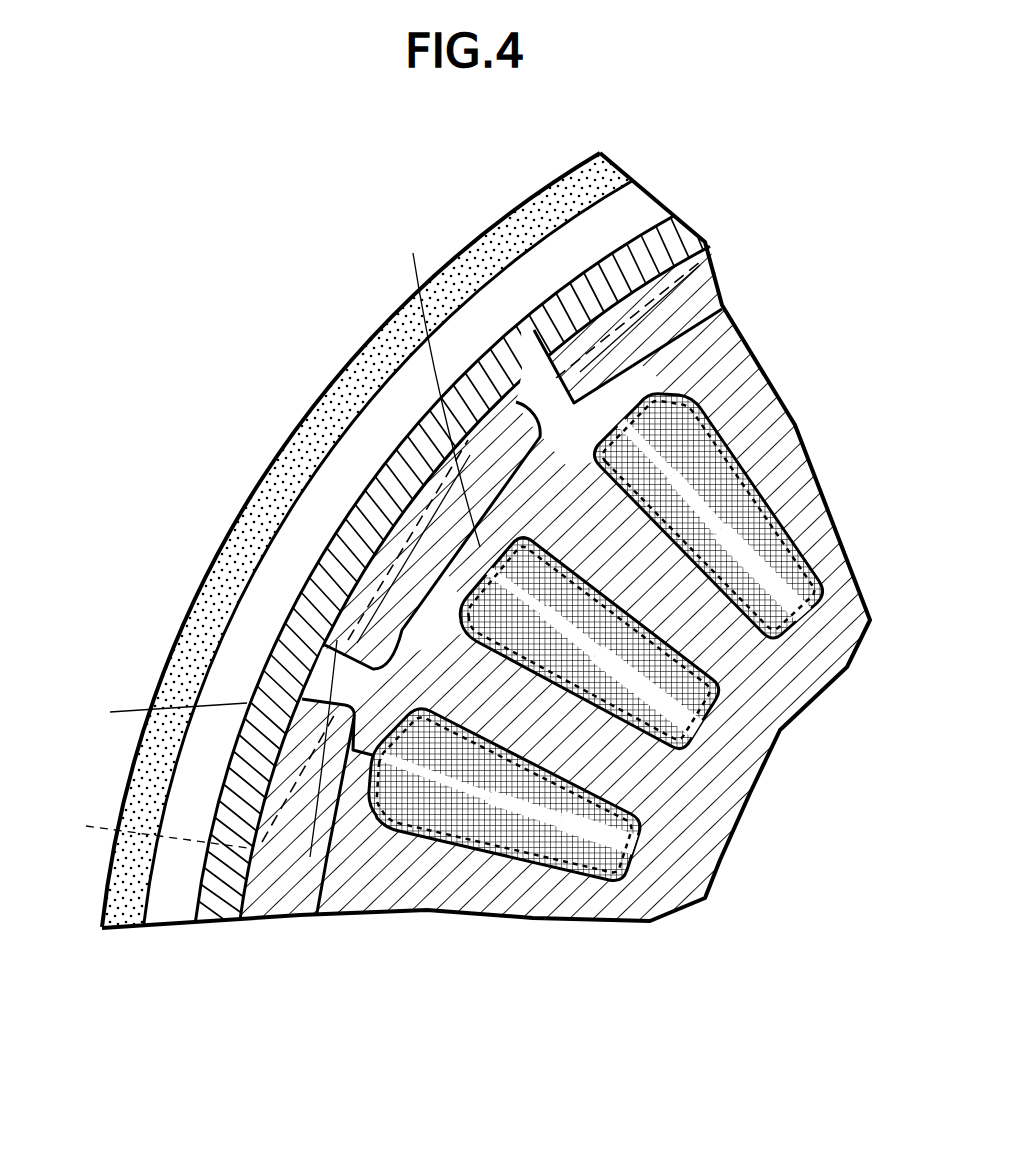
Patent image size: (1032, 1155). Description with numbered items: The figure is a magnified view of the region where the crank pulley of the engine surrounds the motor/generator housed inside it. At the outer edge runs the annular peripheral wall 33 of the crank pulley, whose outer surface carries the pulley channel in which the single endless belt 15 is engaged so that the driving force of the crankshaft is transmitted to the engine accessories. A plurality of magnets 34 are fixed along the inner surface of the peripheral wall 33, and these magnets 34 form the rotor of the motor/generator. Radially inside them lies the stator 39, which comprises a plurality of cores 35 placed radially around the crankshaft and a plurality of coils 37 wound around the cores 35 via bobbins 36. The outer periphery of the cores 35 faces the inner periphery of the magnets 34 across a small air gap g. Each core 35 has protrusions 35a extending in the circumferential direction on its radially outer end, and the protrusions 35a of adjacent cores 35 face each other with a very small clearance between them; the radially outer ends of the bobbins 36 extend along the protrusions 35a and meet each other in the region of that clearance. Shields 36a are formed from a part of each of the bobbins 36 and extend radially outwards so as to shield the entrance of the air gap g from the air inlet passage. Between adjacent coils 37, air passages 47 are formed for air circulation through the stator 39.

The endless belt 15 is at (512, 250).
The air gap g is at (300, 556).
The peripheral wall 33 is at (455, 392).
The magnets 34 is at (628, 312).
The cores 35 is at (626, 560).
The protrusions 35a is at (718, 273).
The bobbins 36 is at (618, 545).
The shields 36a is at (252, 536).
The coils 37 is at (745, 577).
The stator 39 is at (812, 430).
The air passages 47 is at (740, 537).